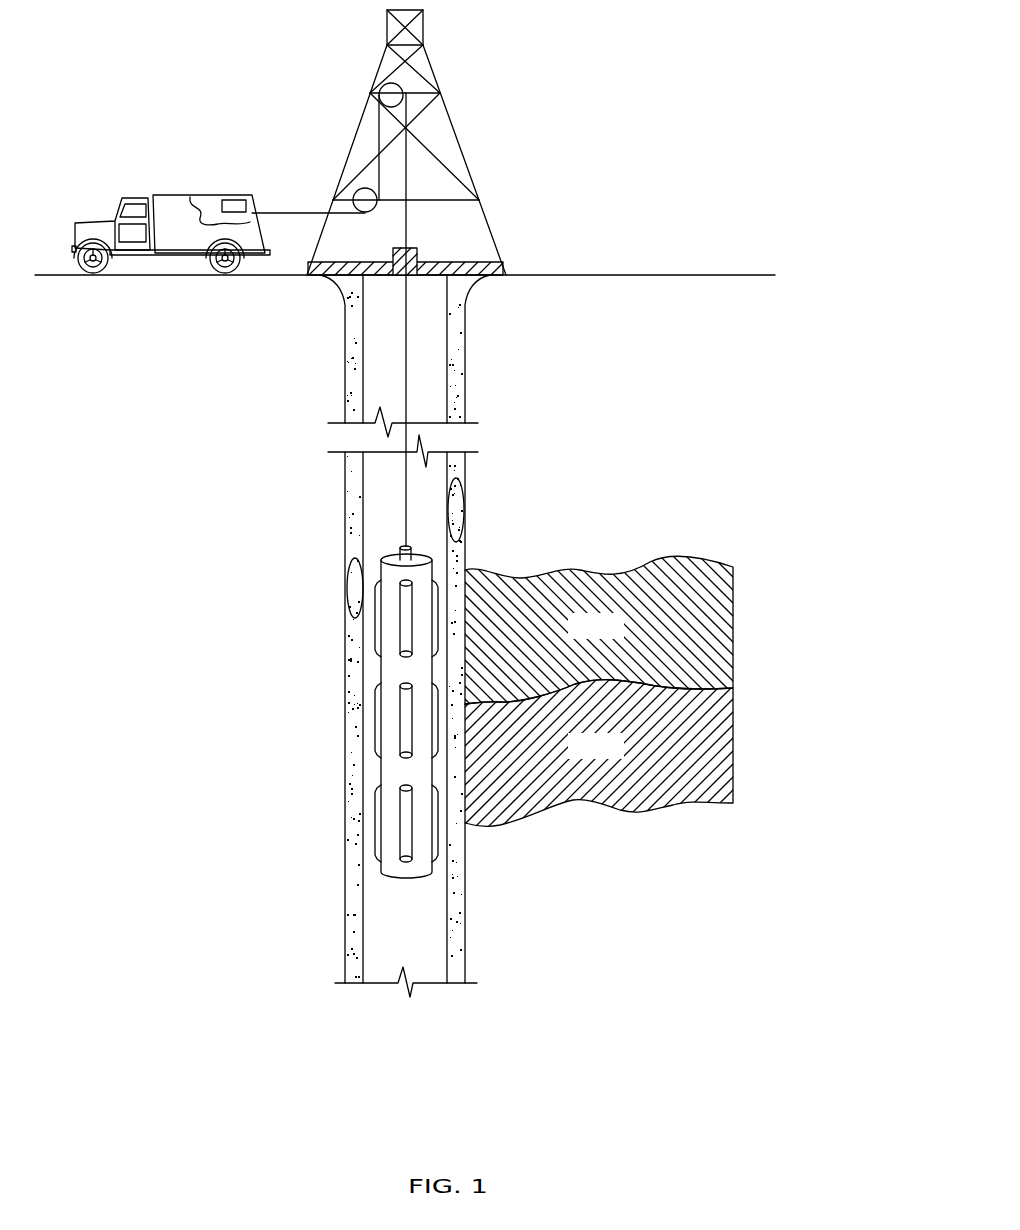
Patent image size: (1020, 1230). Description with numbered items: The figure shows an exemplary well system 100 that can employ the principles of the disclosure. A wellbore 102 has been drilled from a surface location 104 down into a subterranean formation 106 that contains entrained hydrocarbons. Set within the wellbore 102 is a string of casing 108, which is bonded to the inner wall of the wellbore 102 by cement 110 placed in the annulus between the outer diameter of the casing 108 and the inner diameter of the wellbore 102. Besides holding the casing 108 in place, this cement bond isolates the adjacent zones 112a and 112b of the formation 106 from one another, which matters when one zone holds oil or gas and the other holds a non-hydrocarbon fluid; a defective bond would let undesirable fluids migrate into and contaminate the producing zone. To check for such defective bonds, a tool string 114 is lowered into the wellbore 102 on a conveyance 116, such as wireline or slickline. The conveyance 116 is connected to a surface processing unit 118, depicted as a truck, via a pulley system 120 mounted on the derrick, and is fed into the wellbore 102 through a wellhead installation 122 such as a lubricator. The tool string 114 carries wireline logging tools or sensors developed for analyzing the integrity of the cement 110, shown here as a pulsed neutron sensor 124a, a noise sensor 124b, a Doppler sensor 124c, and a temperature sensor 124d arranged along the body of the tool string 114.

The well system 100 is at (644, 100).
The wellbore 102 is at (385, 923).
The surface location 104 is at (682, 275).
The subterranean formation 106 is at (585, 665).
The casing 108 is at (447, 968).
The cement 110 is at (356, 991).
The zone 112a is at (618, 638).
The zone 112b is at (618, 758).
The tool string 114 is at (386, 557).
The conveyance 116 is at (407, 478).
The surface processing unit 118 is at (208, 193).
The pulley system 120 is at (391, 95).
The wellhead installation 122 is at (420, 255).
The pulsed neutron sensor 124a is at (376, 645).
The noise sensor 124b is at (376, 750).
The Doppler sensor 124c is at (376, 850).
The temperature sensor 124d is at (440, 586).